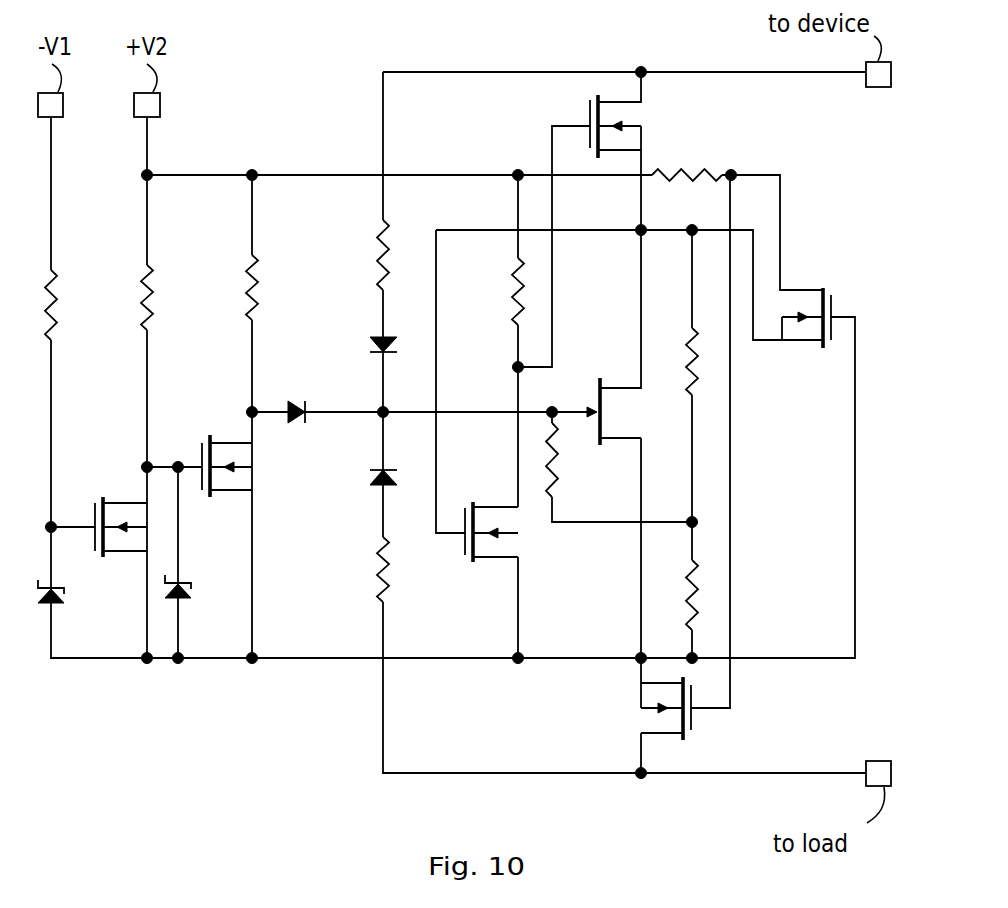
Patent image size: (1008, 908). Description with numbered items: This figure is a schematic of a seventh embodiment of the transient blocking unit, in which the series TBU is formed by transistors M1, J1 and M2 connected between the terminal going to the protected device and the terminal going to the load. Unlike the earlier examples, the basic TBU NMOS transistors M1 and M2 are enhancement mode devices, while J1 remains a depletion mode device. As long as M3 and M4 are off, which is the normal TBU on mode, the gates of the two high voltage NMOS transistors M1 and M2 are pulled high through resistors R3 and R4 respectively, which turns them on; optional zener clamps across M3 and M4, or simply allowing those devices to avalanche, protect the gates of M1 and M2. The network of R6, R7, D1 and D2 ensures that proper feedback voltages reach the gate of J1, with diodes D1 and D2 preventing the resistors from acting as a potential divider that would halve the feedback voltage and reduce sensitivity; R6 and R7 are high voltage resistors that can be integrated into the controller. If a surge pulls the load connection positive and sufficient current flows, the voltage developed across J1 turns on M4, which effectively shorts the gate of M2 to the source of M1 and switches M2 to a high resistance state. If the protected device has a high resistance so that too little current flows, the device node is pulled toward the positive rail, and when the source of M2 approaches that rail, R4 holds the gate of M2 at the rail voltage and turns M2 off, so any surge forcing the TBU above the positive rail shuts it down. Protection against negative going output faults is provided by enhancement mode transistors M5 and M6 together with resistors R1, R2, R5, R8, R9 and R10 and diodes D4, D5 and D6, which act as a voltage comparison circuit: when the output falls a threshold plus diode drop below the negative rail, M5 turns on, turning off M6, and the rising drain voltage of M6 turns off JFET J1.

The resistor R1 is at (688, 345).
The resistor R2 is at (688, 600).
The resistor R3 is at (517, 298).
The resistor R4 is at (697, 172).
The resistor R5 is at (560, 465).
The resistor R6 is at (390, 243).
The resistor R7 is at (375, 572).
The resistor R8 is at (63, 300).
The resistor R9 is at (150, 300).
The resistor R10 is at (257, 294).
The diode D1 is at (372, 343).
The diode D2 is at (373, 482).
The diode D4 is at (57, 603).
The diode D5 is at (187, 598).
The diode D6 is at (292, 401).
The enhancement mode HV NMOS transistor M1 is at (597, 100).
The enhancement mode HV NMOS transistor M2 is at (686, 740).
The transistor M3 is at (473, 563).
The transistor M4 is at (823, 288).
The enhancement mode NMOS transistor M5 is at (103, 498).
The enhancement mode NMOS transistor M6 is at (209, 437).
The depletion mode JFET J1 is at (600, 393).